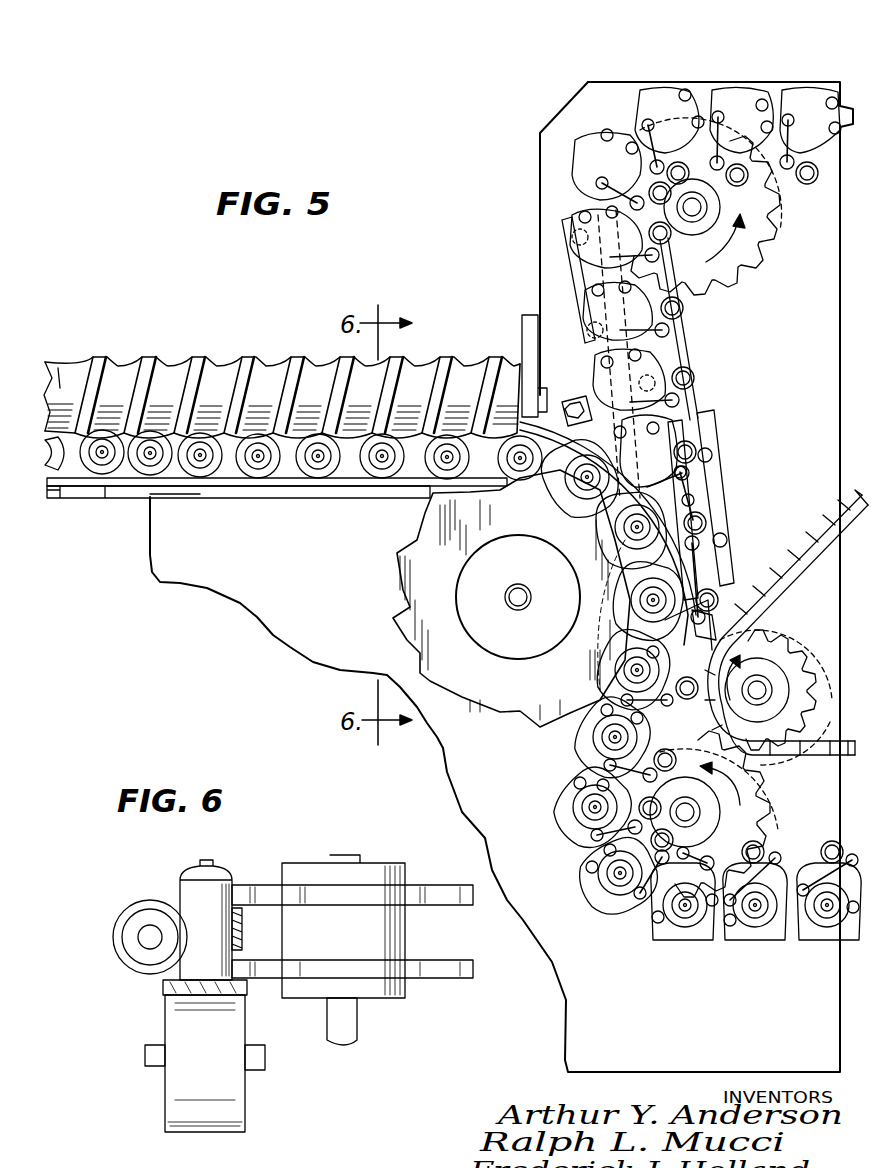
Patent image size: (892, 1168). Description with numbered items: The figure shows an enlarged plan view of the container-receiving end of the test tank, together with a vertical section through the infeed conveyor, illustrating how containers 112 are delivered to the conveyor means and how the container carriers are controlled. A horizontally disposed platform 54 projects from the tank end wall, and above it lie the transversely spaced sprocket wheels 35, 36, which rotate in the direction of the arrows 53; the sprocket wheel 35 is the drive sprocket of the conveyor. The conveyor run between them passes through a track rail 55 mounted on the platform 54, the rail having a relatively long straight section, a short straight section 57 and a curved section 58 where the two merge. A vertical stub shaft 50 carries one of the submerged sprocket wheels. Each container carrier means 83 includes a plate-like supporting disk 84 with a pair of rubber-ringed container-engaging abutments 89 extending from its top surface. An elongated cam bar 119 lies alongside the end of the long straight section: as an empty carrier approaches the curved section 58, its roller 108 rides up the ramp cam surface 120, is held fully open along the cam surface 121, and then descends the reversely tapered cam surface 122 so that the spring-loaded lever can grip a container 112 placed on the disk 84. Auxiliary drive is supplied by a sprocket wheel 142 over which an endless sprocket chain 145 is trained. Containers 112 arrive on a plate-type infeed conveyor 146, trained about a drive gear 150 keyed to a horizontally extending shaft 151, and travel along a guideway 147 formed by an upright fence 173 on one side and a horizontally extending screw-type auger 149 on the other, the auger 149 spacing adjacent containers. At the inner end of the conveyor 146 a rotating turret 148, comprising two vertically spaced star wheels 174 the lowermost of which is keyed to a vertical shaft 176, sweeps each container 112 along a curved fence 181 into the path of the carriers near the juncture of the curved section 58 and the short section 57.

In FIG. 5, the sprocket wheel 35 is at (765, 815).
In FIG. 5, the sprocket wheel 36 is at (770, 232).
In FIG. 5, the vertical stub shaft 50 is at (598, 362).
In FIG. 5, the arrows 53 is at (745, 265).
In FIG. 5, the platform 54 is at (283, 627).
In FIG. 5, the track rail 55 is at (665, 352).
In FIG. 5, the short straight section 57 is at (708, 618).
In FIG. 5, the curved section 58 is at (596, 560).
In FIG. 5, the container carrier means 83 is at (655, 82).
In FIG. 5, the container supporting disk 84 is at (798, 100).
In FIG. 5, the container-engaging abutments 89 is at (650, 920).
In FIG. 5, the roller 108 is at (792, 182).
In FIG. 5, the container 112 is at (318, 478).
In FIG. 6, the container 112 is at (193, 890).
In FIG. 5, the cam bar 119 is at (716, 493).
In FIG. 5, the cam surface 120 is at (688, 418).
In FIG. 5, the cam surface 121 is at (708, 475).
In FIG. 5, the cam surface 122 is at (732, 570).
In FIG. 5, the sprocket wheel 142 is at (778, 652).
In FIG. 5, the endless sprocket chain 145 is at (816, 560).
In FIG. 6, the plate-type conveyor 146 is at (165, 995).
In FIG. 5, the guideway 147 is at (118, 474).
In FIG. 5, the rotating turret 148 is at (397, 568).
In FIG. 5, the screw-type auger 149 is at (257, 357).
In FIG. 6, the screw-type auger 149 is at (130, 920).
In FIG. 6, the drive gear 150 is at (173, 1085).
In FIG. 6, the horizontally extending shaft 151 is at (265, 1060).
In FIG. 5, the upright fence 173 is at (138, 486).
In FIG. 6, the upright fence 173 is at (242, 930).
In FIG. 6, the star wheels 174 is at (440, 908).
In FIG. 5, the vertical shaft 176 is at (520, 604).
In FIG. 6, the vertical shaft 176 is at (360, 1022).
In FIG. 5, the curved fence 181 is at (562, 470).